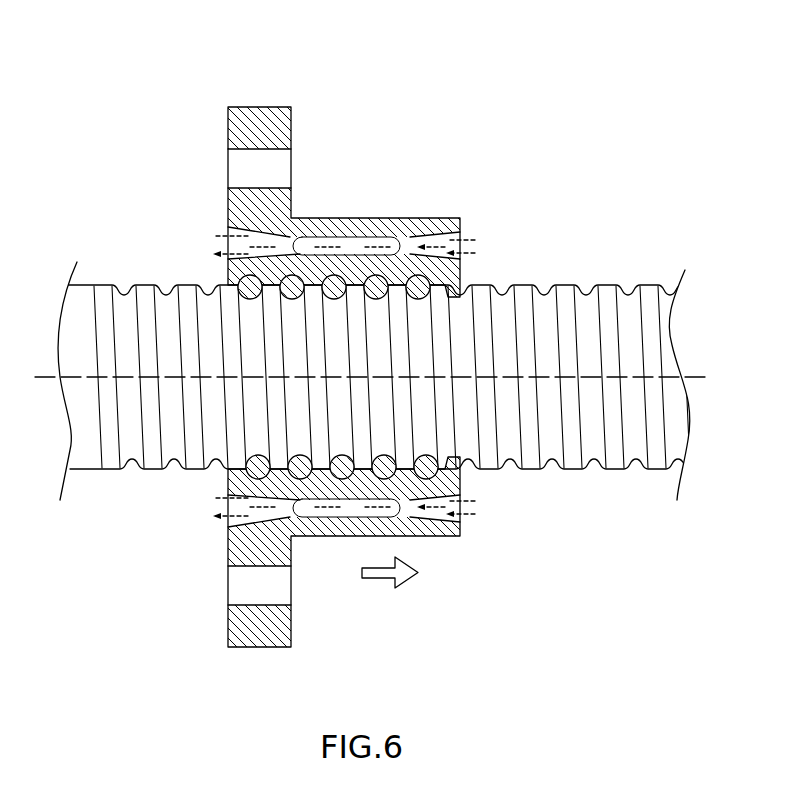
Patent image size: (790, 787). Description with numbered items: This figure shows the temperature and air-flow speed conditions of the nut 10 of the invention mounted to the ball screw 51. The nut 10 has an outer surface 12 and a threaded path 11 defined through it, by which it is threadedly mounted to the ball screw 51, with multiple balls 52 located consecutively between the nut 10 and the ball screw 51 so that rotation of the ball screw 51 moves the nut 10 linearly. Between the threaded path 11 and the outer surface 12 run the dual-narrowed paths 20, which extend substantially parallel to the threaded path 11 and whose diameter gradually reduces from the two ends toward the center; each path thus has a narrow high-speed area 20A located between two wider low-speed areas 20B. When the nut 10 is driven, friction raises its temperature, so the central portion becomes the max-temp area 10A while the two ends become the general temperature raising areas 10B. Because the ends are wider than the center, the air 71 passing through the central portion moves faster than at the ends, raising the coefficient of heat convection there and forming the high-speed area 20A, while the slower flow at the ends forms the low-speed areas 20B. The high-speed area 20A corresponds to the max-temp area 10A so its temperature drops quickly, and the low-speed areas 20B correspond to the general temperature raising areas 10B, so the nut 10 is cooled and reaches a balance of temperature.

The nut 10 is at (335, 552).
The max-temp area 10A is at (352, 497).
The general temperature raising areas 10B is at (258, 493).
The threaded path 11 is at (405, 465).
The outer surface 12 is at (452, 218).
The dual-narrowed paths 20 is at (391, 159).
The high-speed area 20A is at (335, 237).
The low-speed areas 20B is at (263, 237).
The ball screw 51 is at (625, 297).
The balls 52 is at (425, 313).
The air 71 is at (470, 238).